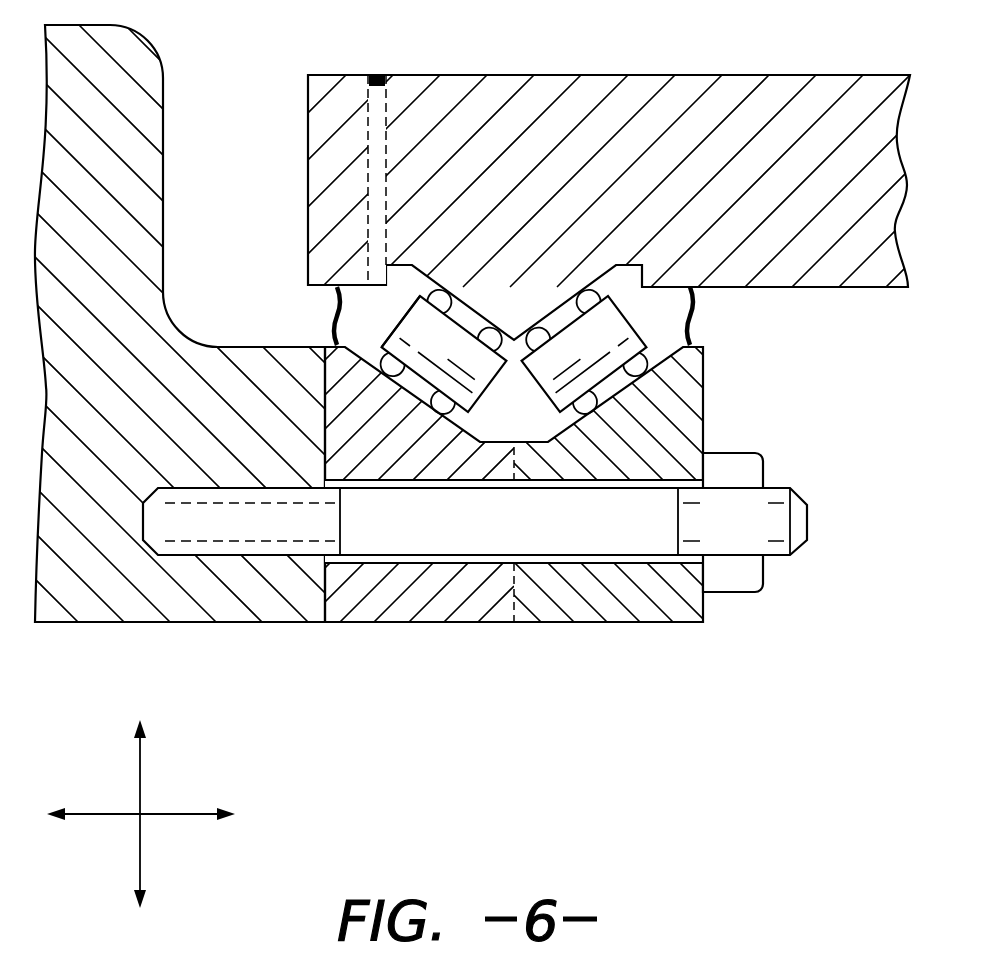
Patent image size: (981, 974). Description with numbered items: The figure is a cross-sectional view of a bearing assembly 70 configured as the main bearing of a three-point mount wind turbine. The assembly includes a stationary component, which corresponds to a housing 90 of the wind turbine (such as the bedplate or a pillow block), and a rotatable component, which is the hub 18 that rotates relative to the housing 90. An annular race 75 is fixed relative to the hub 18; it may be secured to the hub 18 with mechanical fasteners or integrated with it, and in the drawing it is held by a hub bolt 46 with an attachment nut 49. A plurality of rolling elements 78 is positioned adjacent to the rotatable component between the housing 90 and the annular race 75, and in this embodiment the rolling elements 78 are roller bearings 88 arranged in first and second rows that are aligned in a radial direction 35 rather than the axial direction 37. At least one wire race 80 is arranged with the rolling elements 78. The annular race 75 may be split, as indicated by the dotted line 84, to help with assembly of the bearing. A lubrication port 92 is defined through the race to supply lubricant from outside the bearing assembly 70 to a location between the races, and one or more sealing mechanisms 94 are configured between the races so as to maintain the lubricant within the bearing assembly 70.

The hub 18 is at (170, 183).
The radial direction 35 is at (172, 816).
The axial direction 37 is at (143, 776).
The hub bolt 46 is at (634, 538).
The attachment nut 49 is at (733, 596).
The bearing assembly 70 is at (797, 407).
The annular race 75 is at (383, 630).
The rolling elements 78 is at (576, 225).
The wire race 80 is at (588, 406).
The dotted line 84 is at (516, 592).
The roller bearings 88 is at (422, 328).
The housing 90 is at (298, 131).
The lubrication port 92 is at (378, 119).
The sealing mechanism 94 is at (378, 78).